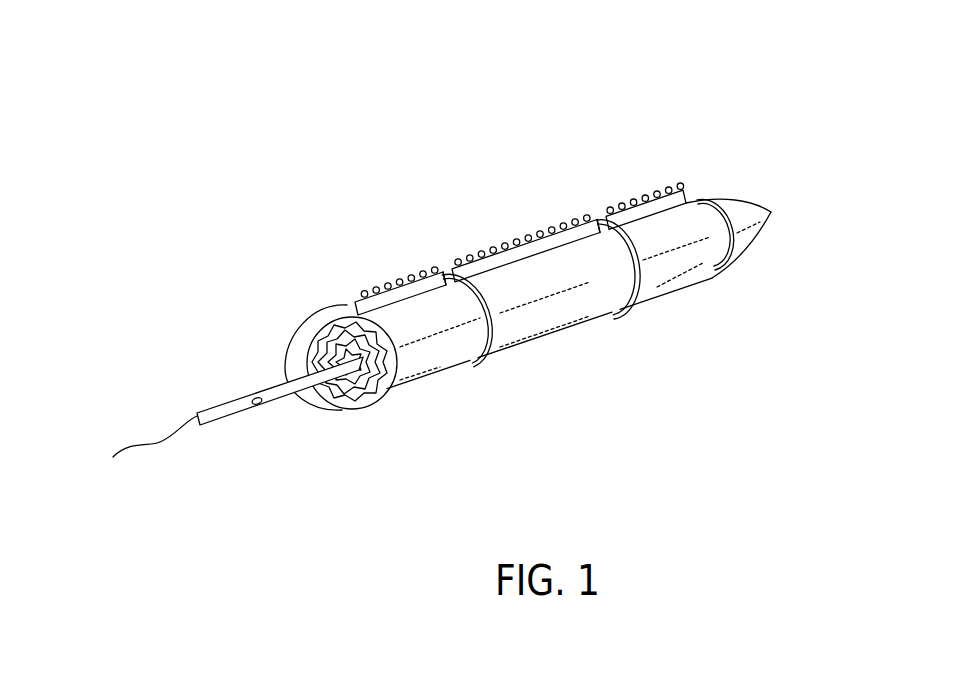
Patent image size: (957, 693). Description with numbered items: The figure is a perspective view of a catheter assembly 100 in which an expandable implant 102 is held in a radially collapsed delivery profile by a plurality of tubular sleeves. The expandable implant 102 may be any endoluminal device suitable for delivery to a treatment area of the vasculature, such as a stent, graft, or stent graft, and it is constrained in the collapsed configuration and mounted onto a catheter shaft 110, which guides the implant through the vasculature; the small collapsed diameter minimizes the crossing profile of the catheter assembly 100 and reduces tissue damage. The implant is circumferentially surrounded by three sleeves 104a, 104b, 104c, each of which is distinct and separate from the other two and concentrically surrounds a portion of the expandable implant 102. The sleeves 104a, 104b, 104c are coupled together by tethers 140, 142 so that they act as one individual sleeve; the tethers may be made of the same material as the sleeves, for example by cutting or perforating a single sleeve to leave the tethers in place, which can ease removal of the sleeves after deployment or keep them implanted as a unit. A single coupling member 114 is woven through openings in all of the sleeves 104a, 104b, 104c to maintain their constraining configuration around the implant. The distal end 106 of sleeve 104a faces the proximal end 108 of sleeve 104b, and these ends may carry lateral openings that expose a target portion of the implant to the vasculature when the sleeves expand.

The catheter assembly 100 is at (668, 120).
The expandable implant 102 is at (347, 410).
The sleeve 104a is at (407, 392).
The sleeve 104b is at (557, 340).
The sleeve 104c is at (683, 293).
The distal end of sleeve 104a 106 is at (468, 355).
The proximal end of sleeve 104b 108 is at (492, 333).
The catheter shaft 110 is at (210, 422).
The coupling member 114 is at (493, 250).
The tether 140 is at (446, 281).
The tether 142 is at (628, 242).